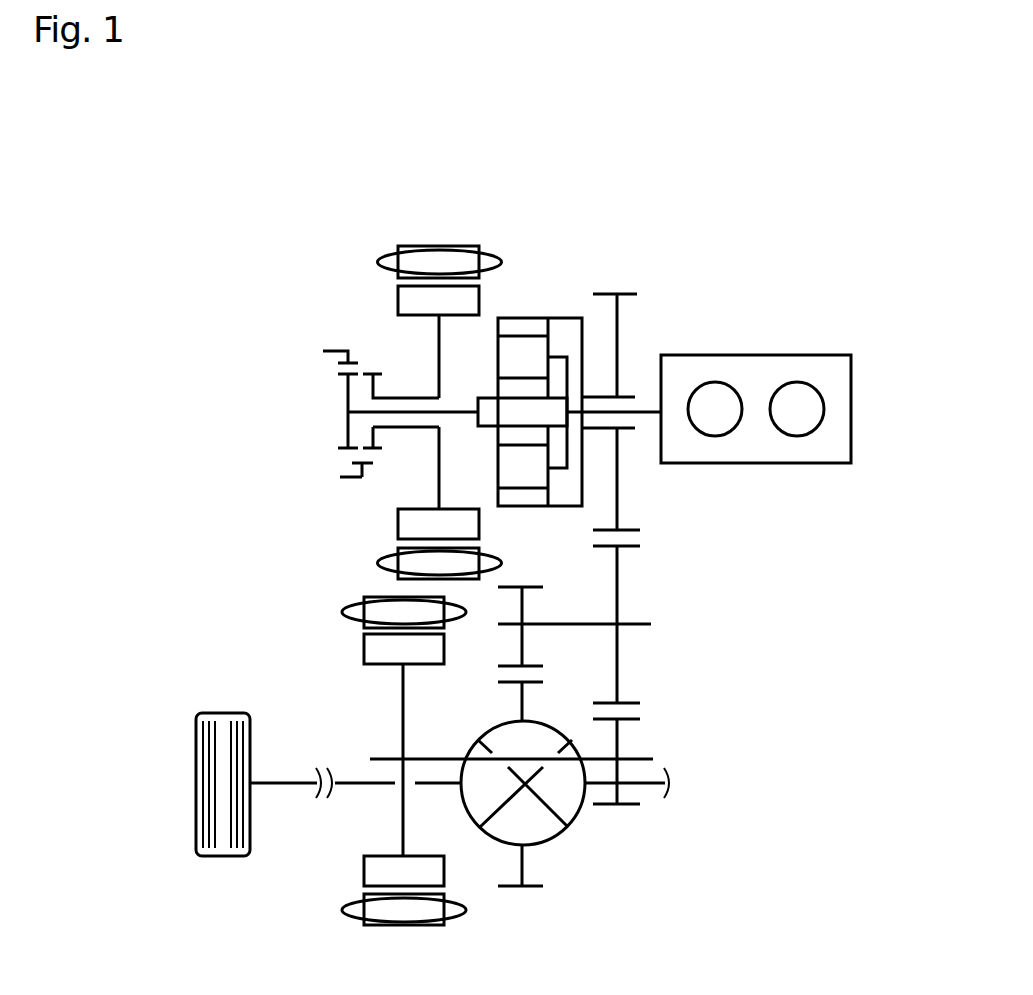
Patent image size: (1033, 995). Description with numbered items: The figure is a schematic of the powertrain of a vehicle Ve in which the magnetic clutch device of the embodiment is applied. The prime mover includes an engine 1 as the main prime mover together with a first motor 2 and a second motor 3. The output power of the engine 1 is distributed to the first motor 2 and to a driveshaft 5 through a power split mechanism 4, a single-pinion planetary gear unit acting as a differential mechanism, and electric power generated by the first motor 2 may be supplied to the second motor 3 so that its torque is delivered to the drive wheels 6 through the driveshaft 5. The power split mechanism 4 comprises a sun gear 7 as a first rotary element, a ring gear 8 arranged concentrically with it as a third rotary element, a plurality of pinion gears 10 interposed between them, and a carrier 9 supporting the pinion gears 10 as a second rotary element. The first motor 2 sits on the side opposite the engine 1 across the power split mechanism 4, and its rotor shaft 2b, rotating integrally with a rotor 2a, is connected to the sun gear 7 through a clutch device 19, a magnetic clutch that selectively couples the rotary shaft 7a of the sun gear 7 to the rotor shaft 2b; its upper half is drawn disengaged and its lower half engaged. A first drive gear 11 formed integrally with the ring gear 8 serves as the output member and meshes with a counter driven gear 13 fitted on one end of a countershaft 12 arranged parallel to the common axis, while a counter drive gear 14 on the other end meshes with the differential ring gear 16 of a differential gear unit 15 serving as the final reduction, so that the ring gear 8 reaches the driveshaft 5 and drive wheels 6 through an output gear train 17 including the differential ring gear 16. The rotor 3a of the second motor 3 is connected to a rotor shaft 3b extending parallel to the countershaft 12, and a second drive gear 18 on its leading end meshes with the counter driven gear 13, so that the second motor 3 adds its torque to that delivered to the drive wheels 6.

The engine 1 is at (803, 355).
The first motor 2 is at (426, 386).
The rotor 2a is at (398, 302).
The rotor shaft 2b is at (410, 396).
The second motor 3 is at (389, 789).
The rotor 3a is at (364, 657).
The rotor shaft 3b is at (440, 758).
The power split mechanism 4 is at (559, 353).
The driveshaft 5 is at (299, 783).
The drive wheels 6 is at (226, 857).
The sun gear 7 is at (503, 390).
The rotary shaft 7a is at (348, 412).
The ring gear 8 is at (520, 318).
The carrier 9 is at (568, 362).
The pinion gears 10 is at (507, 465).
The first drive gear 11 is at (630, 293).
The countershaft 12 is at (578, 627).
The counter driven gear 13 is at (638, 548).
The counter drive gear 14 is at (530, 587).
The differential gear unit 15 is at (565, 830).
The differential ring gear 16 is at (512, 888).
The output gear train 17 is at (673, 662).
The second drive gear 18 is at (633, 806).
The clutch device 19 is at (322, 477).
The vehicle Ve is at (727, 189).